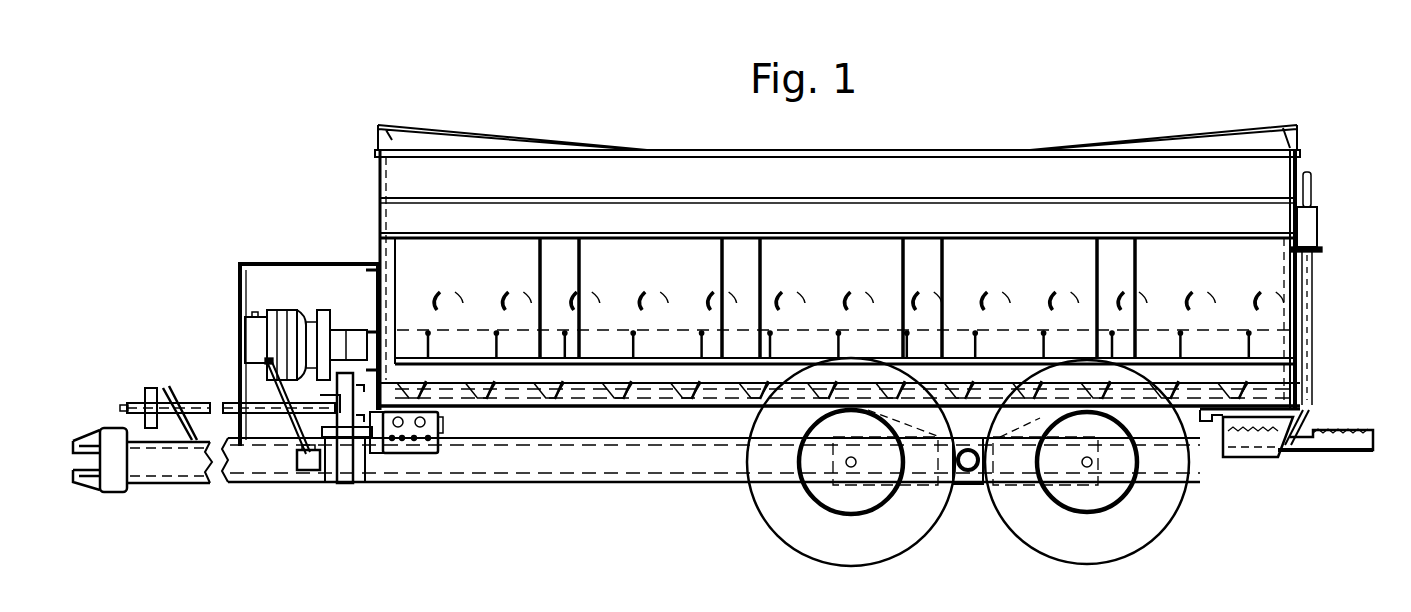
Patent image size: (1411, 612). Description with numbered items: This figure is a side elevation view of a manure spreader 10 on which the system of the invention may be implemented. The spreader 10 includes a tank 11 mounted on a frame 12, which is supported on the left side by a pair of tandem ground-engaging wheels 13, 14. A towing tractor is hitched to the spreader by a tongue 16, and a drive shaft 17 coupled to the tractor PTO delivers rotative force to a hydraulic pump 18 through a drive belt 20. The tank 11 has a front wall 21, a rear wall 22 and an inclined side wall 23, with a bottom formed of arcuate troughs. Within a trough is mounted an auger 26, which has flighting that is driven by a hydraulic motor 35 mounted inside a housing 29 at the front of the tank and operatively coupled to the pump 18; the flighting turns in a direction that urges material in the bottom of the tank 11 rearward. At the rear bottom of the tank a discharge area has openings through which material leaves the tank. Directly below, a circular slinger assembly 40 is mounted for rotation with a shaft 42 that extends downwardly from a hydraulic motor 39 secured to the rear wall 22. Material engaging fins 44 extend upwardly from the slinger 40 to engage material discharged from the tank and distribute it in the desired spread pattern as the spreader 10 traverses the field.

The manure spreader 10 is at (570, 102).
The tank 11 is at (912, 148).
The frame 12 is at (968, 488).
The ground-engaging wheel 13 is at (782, 526).
The ground-engaging wheel 14 is at (1152, 526).
The tongue 16 is at (172, 462).
The drive shaft 17 is at (196, 392).
The hydraulic pump 18 is at (410, 436).
The drive belt 20 is at (343, 470).
The front wall 21 is at (378, 212).
The rear wall 22 is at (1290, 182).
The inclined side wall 23 is at (843, 274).
The auger 26 is at (462, 297).
The housing 29 is at (293, 262).
The hydraulic motor 35 is at (286, 306).
The hydraulic motor 39 is at (1318, 218).
The slinger assembly 40 is at (1343, 457).
The shaft 42 is at (1308, 405).
The material engaging fin 44 is at (1332, 435).